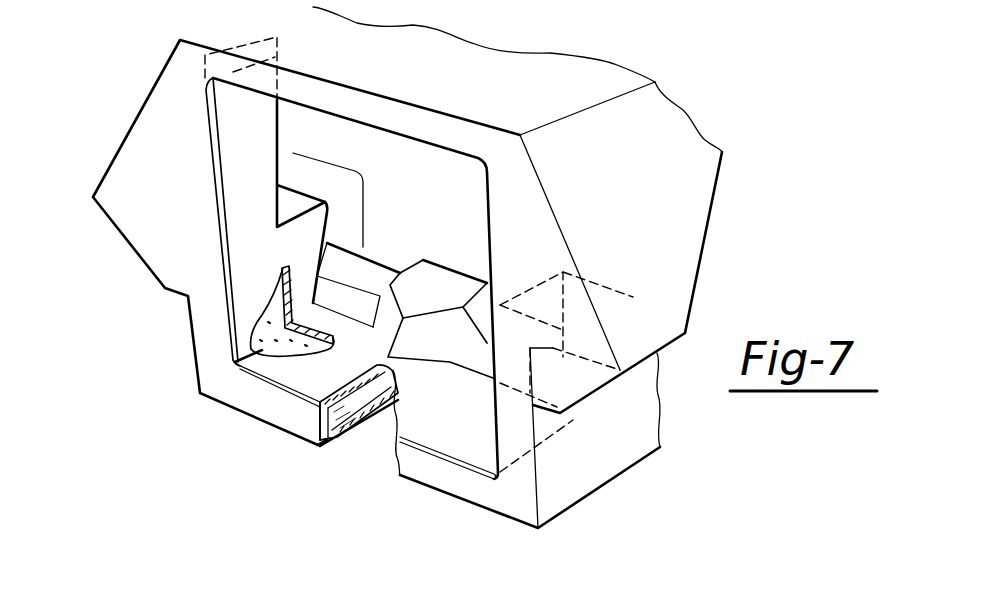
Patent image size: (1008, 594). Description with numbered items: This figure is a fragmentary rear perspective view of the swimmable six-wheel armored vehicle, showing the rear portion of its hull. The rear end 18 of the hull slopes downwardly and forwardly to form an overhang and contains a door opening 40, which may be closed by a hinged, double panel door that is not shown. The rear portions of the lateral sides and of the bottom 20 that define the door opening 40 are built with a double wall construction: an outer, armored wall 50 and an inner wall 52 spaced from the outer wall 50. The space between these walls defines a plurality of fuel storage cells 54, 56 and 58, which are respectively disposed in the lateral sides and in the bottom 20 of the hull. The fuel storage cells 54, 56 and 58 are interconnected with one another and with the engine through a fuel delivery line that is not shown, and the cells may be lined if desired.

The rear end 18 is at (160, 88).
The bottom 20 is at (421, 78).
The door opening 40 is at (313, 110).
The inner wall 52 is at (355, 376).
The outer armored wall 50 is at (337, 434).
The fuel storage cell 54 is at (320, 441).
The fuel storage cell 56 is at (240, 278).
The fuel storage cell 58 is at (518, 443).